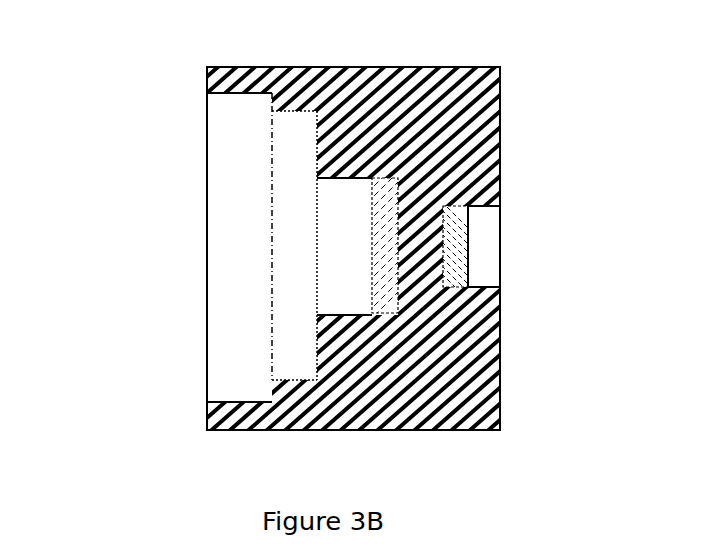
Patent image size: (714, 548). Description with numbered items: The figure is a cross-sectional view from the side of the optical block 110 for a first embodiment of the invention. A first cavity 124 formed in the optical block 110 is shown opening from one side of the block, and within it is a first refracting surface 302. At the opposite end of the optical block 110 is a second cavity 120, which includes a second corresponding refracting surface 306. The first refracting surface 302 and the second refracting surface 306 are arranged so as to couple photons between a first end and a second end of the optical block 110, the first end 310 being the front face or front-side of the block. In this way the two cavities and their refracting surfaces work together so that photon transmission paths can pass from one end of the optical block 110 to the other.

The optical block 110 is at (138, 94).
The first end 310 is at (500, 127).
The first cavity 124 is at (208, 296).
The first refracting surface 302 is at (372, 256).
The second refracting surface 306 is at (462, 231).
The second cavity 120 is at (500, 267).